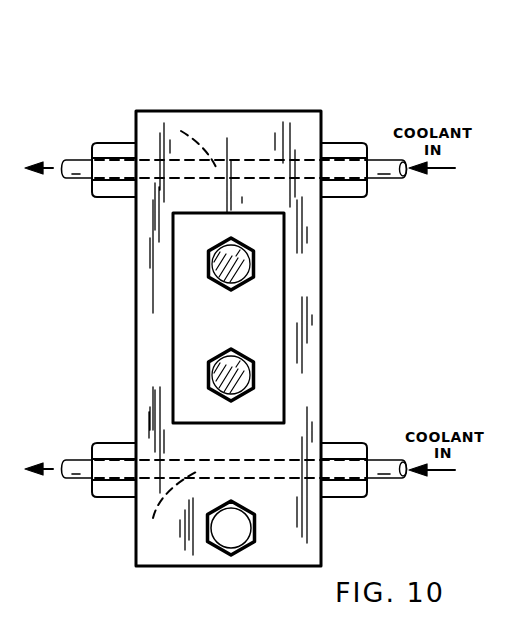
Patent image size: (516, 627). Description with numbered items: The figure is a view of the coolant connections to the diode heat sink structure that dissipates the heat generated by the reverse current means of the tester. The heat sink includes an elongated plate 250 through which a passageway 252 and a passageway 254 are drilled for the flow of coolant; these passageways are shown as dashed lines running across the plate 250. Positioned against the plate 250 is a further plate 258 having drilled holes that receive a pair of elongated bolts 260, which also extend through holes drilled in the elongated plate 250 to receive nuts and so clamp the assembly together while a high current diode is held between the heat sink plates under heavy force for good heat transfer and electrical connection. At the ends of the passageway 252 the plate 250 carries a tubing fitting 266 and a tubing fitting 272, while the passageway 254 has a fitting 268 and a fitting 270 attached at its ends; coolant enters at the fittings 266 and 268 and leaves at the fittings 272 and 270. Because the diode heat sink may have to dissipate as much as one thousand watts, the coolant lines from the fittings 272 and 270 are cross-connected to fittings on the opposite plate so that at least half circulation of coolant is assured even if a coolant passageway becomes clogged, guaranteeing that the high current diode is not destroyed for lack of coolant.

The elongated plate 250 is at (243, 130).
The passageway 252 is at (181, 131).
The passageway 254 is at (152, 518).
The plate 258 is at (258, 332).
The elongated bolts 260 is at (238, 270).
The tubing fitting 266 is at (335, 151).
The fitting 268 is at (352, 452).
The fitting 270 is at (113, 451).
The tubing fitting 272 is at (112, 152).